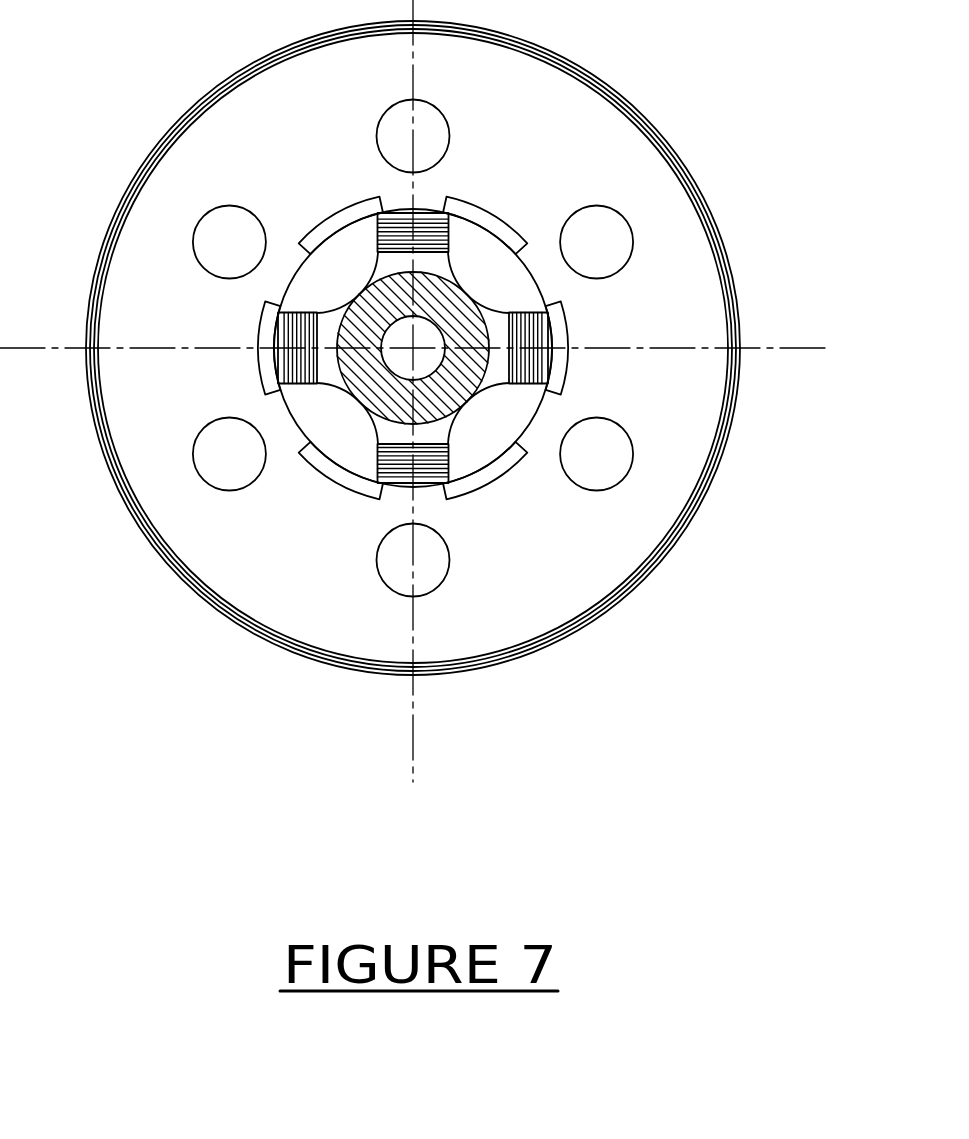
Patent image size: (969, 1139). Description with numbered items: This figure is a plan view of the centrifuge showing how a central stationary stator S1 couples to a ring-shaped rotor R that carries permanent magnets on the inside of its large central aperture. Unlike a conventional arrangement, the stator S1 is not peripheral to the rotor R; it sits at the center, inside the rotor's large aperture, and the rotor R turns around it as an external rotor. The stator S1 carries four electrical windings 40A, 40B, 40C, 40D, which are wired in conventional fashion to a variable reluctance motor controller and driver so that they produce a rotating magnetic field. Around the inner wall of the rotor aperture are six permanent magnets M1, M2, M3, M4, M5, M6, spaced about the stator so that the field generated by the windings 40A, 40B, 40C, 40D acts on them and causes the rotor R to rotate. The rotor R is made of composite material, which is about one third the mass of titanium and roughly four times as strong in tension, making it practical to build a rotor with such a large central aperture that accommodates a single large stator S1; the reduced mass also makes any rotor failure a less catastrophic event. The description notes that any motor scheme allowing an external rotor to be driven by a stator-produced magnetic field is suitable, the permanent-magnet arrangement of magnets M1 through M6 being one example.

The rotor R is at (462, 623).
The central stationary stator S1 is at (458, 279).
The permanent magnet M1 is at (566, 342).
The permanent magnet M2 is at (506, 471).
The permanent magnet M3 is at (341, 477).
The permanent magnet M4 is at (262, 338).
The permanent magnet M5 is at (321, 230).
The permanent magnet M6 is at (522, 233).
The electrical winding 40A is at (377, 226).
The electrical winding 40B is at (527, 381).
The electrical winding 40C is at (486, 466).
The electrical winding 40D is at (306, 381).